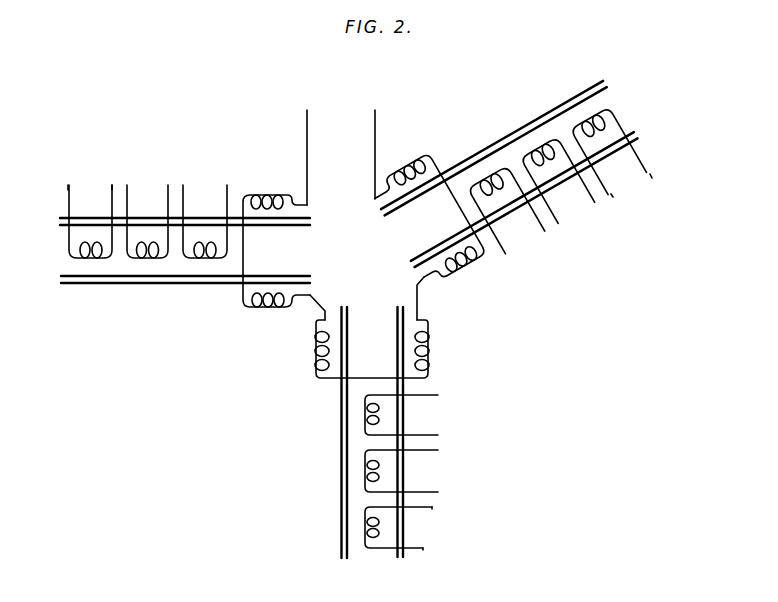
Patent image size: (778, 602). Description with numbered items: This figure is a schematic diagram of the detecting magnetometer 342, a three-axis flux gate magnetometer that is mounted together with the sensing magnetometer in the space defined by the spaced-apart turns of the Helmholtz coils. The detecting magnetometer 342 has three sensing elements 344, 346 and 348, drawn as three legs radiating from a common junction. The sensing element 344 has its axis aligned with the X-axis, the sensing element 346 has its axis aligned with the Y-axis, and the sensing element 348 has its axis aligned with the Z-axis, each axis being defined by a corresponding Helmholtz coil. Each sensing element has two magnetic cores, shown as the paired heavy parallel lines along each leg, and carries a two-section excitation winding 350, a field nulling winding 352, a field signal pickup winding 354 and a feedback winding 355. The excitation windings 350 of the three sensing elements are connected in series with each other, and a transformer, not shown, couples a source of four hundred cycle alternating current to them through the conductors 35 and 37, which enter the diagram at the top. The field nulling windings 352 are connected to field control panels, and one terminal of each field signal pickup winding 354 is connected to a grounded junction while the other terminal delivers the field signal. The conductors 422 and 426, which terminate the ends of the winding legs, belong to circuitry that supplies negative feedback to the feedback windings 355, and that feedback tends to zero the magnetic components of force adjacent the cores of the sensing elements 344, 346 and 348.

The conductor 35 is at (307, 123).
The conductor 37 is at (375, 123).
The detecting magnetometer 342 is at (284, 337).
The sensing element 344 is at (292, 496).
The sensing element 346 is at (148, 342).
The sensing element 348 is at (492, 134).
The excitation winding 350 is at (266, 292).
The field nulling winding 352 is at (206, 258).
The field signal pickup winding 354 is at (150, 258).
The feedback winding 355 is at (89, 258).
The conductor 422 is at (68, 190).
The conductor 426 is at (110, 187).